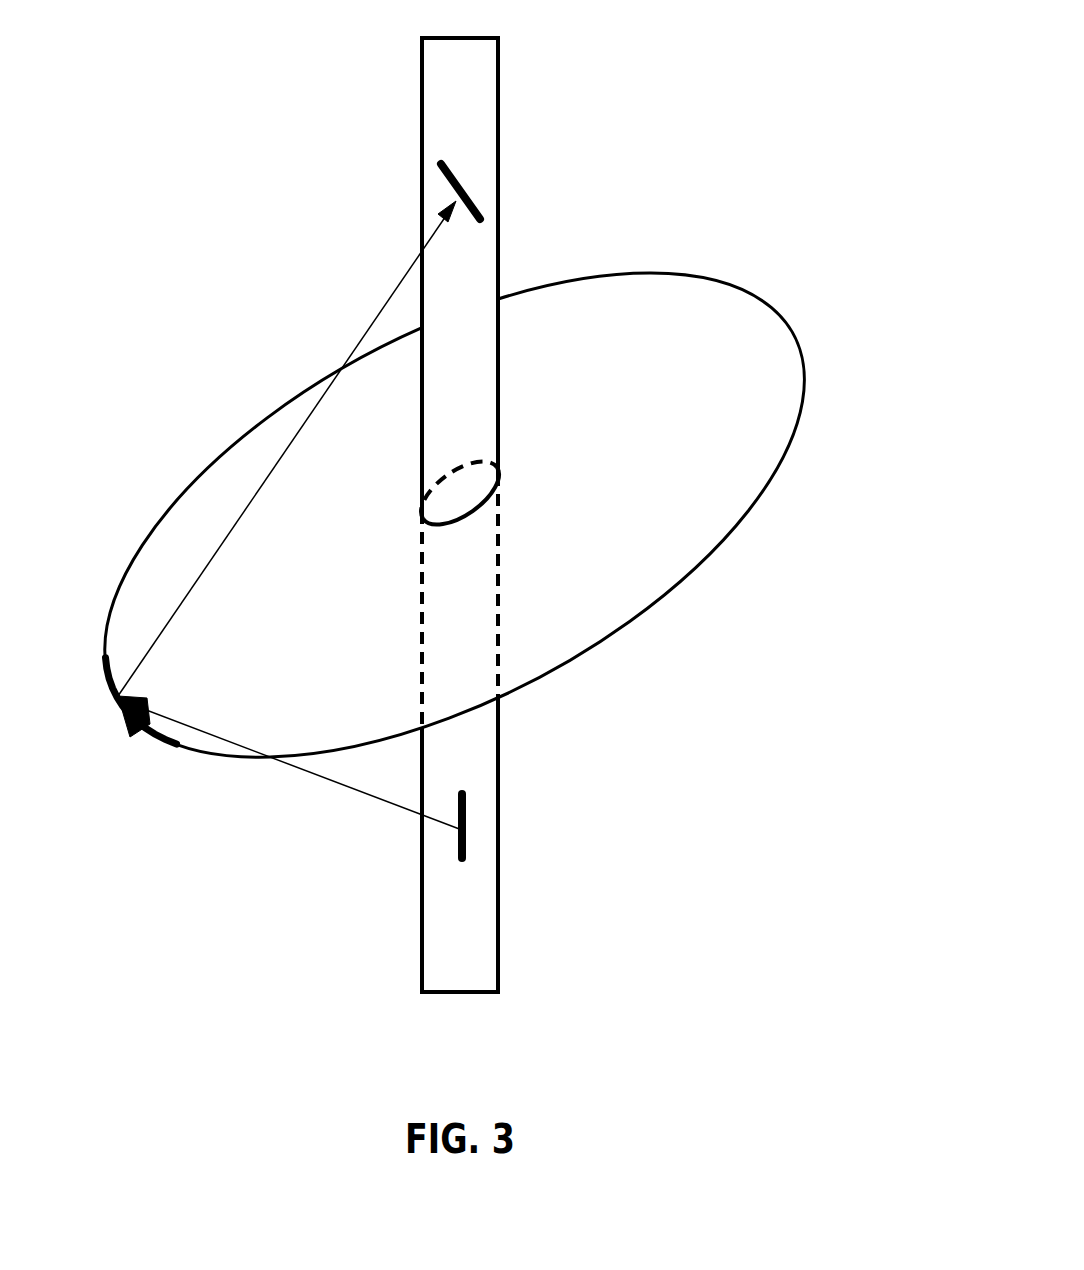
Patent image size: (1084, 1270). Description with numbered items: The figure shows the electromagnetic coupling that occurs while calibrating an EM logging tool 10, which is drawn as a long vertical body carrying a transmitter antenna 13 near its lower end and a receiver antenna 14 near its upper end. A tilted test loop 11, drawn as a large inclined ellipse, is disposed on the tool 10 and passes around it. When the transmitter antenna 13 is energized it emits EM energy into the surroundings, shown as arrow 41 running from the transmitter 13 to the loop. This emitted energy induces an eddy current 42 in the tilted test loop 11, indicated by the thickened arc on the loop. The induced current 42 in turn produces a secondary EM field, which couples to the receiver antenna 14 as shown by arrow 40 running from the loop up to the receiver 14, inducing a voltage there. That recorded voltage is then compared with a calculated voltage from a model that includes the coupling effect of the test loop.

The EM logging tool 10 is at (498, 100).
The tilted test loop 11 is at (810, 358).
The transmitter antenna 13 is at (466, 840).
The receiver antenna 14 is at (445, 178).
The arrow 40 is at (345, 362).
The arrow 41 is at (317, 773).
The eddy current 42 is at (117, 699).